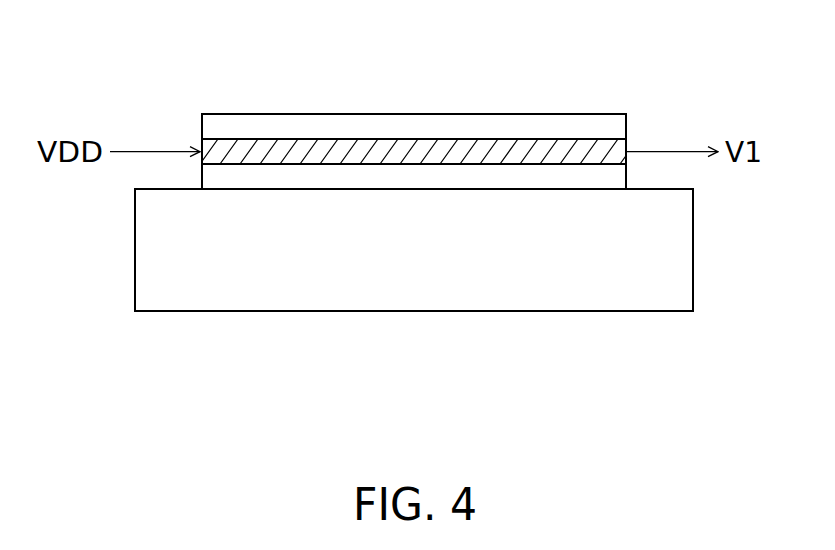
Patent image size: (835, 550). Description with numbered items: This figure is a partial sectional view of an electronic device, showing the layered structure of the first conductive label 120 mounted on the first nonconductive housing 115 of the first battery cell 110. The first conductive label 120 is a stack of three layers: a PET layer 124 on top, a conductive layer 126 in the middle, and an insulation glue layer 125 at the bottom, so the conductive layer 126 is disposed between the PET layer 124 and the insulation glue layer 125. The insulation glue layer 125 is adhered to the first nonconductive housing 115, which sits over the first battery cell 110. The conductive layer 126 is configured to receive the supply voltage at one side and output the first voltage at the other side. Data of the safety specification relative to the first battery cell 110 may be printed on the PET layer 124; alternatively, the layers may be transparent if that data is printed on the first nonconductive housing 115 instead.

The first battery cell 110 is at (678, 250).
The first nonconductive housing 115 is at (667, 188).
The first conductive label 120 is at (181, 137).
The PET layer 124 is at (586, 123).
The insulation glue layer 125 is at (378, 178).
The conductive layer 126 is at (481, 150).